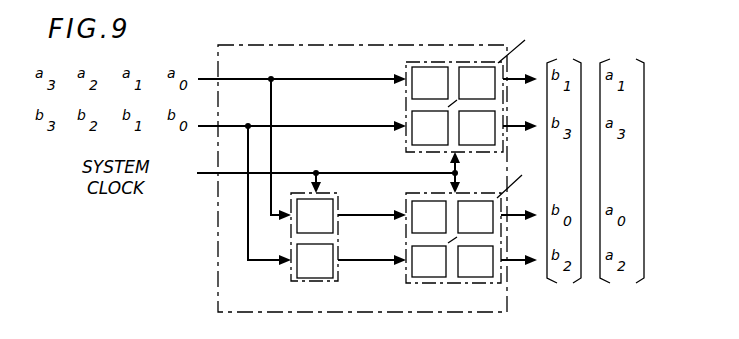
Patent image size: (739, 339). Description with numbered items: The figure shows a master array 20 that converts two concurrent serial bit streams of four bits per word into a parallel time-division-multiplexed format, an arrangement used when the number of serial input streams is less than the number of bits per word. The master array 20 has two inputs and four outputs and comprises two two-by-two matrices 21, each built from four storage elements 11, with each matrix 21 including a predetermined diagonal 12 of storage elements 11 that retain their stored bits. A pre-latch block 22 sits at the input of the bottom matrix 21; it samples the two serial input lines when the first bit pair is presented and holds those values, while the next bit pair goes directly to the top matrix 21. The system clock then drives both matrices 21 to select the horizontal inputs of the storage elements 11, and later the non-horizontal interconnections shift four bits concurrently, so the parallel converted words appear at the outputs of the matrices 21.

The master array 20 is at (278, 45).
The matrix 21 is at (405, 193).
The storage element 11 is at (462, 268).
The diagonal 12 is at (405, 152).
The pre-latch block 22 is at (291, 276).